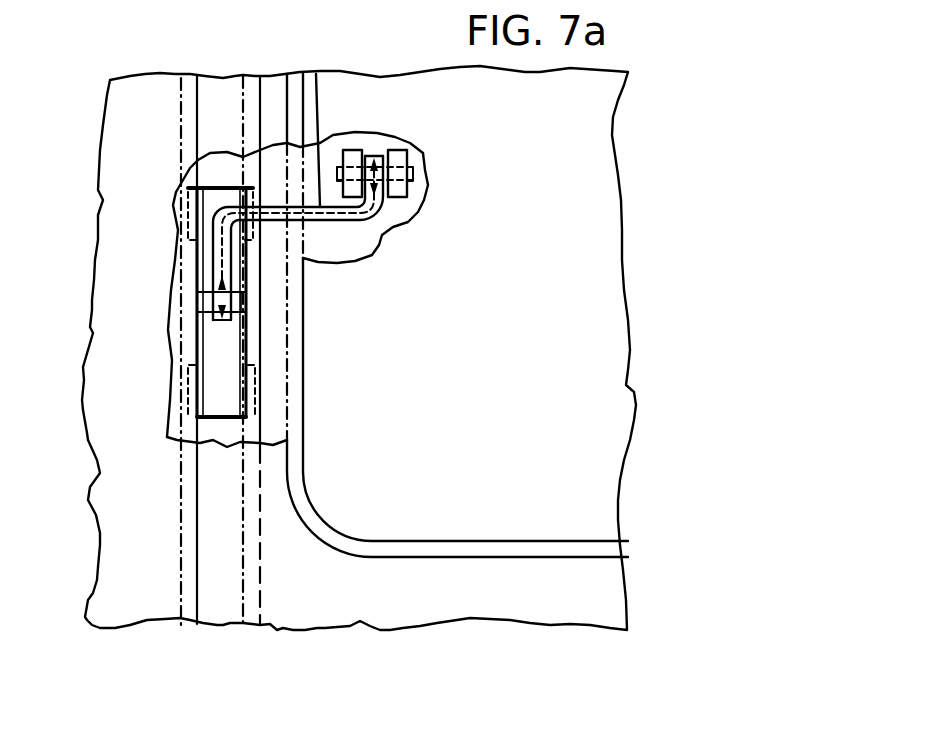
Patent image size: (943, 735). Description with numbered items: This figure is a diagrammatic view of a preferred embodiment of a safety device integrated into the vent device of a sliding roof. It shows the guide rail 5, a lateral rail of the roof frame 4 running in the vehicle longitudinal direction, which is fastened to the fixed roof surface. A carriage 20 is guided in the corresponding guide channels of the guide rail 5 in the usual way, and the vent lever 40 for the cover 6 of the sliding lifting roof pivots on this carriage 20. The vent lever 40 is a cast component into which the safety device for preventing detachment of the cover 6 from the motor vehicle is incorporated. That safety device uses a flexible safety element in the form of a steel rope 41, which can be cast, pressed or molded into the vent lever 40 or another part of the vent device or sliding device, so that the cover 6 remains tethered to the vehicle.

The roof frame 4 is at (142, 534).
The guide rail 5 is at (222, 570).
The cover 6 is at (541, 341).
The carriage 20 is at (217, 341).
The vent lever 40 is at (317, 76).
The steel rope 41 is at (275, 205).